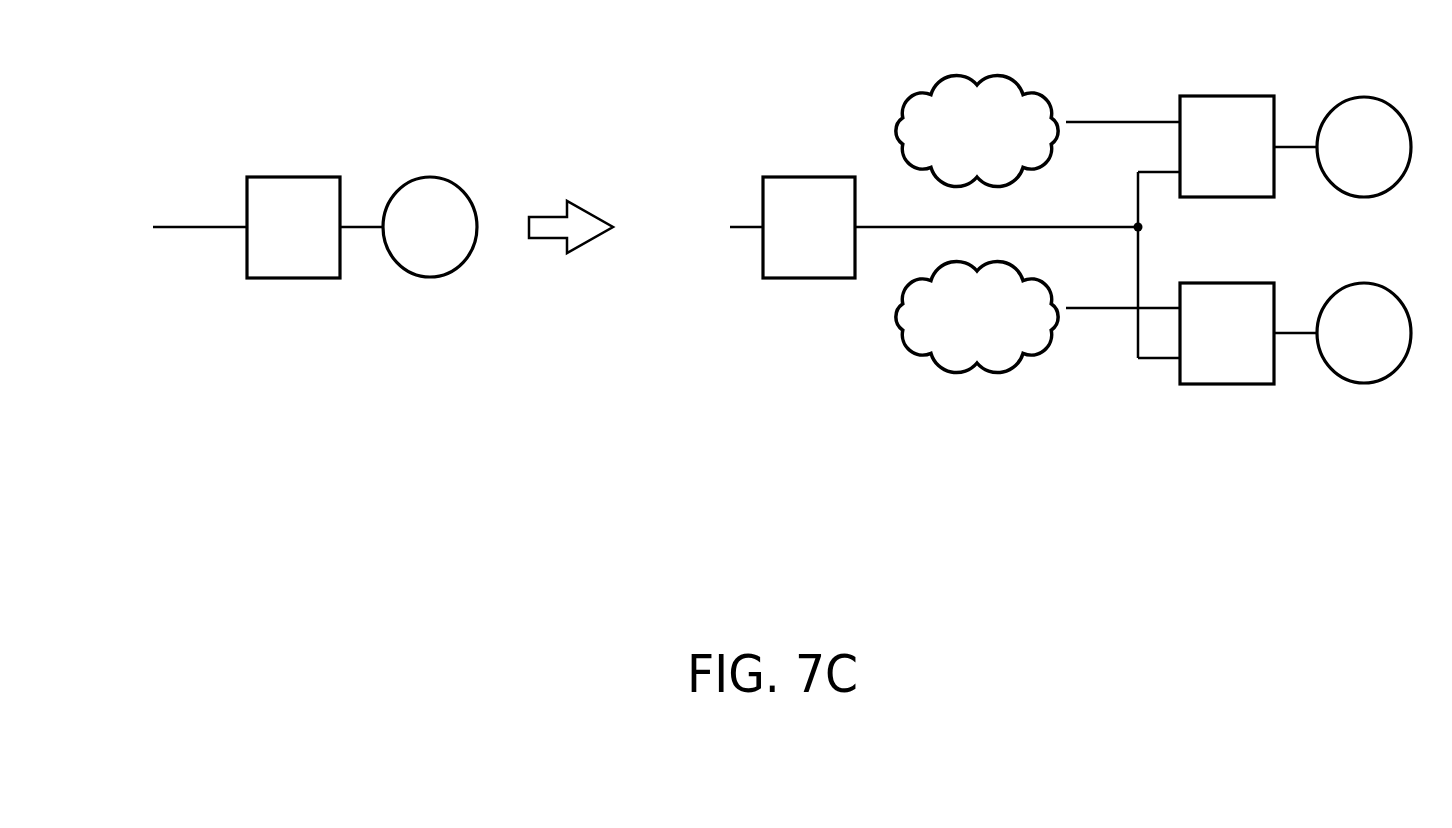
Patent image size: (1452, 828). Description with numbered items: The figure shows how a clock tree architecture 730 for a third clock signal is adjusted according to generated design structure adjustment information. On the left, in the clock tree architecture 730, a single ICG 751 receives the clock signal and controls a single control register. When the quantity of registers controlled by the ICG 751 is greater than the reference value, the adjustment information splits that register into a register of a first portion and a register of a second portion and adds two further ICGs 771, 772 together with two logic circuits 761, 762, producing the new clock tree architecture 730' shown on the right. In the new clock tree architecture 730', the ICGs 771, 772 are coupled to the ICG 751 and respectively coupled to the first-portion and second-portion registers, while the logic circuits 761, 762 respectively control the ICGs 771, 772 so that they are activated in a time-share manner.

The clock tree architecture 730 is at (298, 343).
The new clock tree architecture 730' is at (1055, 303).
The ICG 751 is at (293, 176).
The logic circuit 761 is at (1020, 178).
The logic circuit 762 is at (1020, 365).
The ICG 771 is at (1227, 95).
The ICG 772 is at (1227, 282).